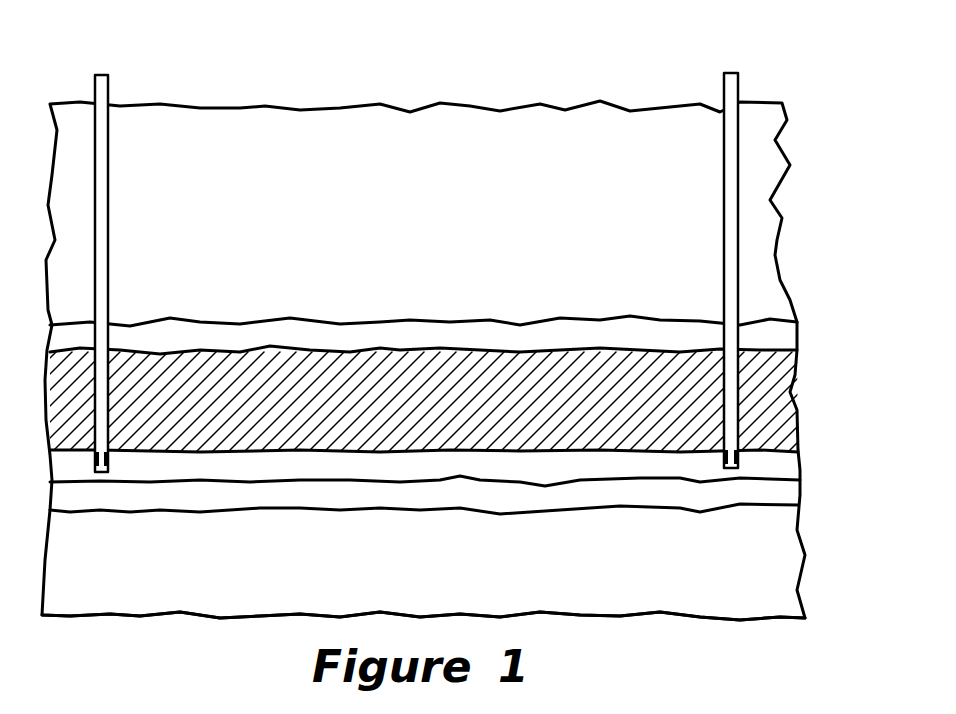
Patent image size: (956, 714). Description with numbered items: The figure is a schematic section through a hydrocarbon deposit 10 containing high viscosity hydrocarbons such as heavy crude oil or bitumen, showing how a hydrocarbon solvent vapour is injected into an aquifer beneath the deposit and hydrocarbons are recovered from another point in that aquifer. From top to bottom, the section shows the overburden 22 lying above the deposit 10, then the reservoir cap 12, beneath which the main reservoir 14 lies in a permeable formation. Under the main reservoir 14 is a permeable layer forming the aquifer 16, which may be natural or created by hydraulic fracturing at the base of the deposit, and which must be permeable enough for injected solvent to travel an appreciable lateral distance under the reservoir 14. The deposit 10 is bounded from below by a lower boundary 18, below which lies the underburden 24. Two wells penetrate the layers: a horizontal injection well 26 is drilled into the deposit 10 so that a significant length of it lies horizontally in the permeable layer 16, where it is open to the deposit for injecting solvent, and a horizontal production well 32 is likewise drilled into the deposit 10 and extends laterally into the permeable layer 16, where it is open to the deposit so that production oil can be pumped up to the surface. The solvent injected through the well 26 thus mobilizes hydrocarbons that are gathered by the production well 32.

The hydrocarbon deposit 10 is at (822, 414).
The reservoir cap 12 is at (797, 338).
The main reservoir 14 is at (790, 391).
The aquifer 16 is at (800, 470).
The lower boundary 18 is at (800, 493).
The overburden 22 is at (783, 230).
The underburden 24 is at (803, 553).
The horizontal injection well 26 is at (739, 213).
The horizontal production well 32 is at (110, 87).